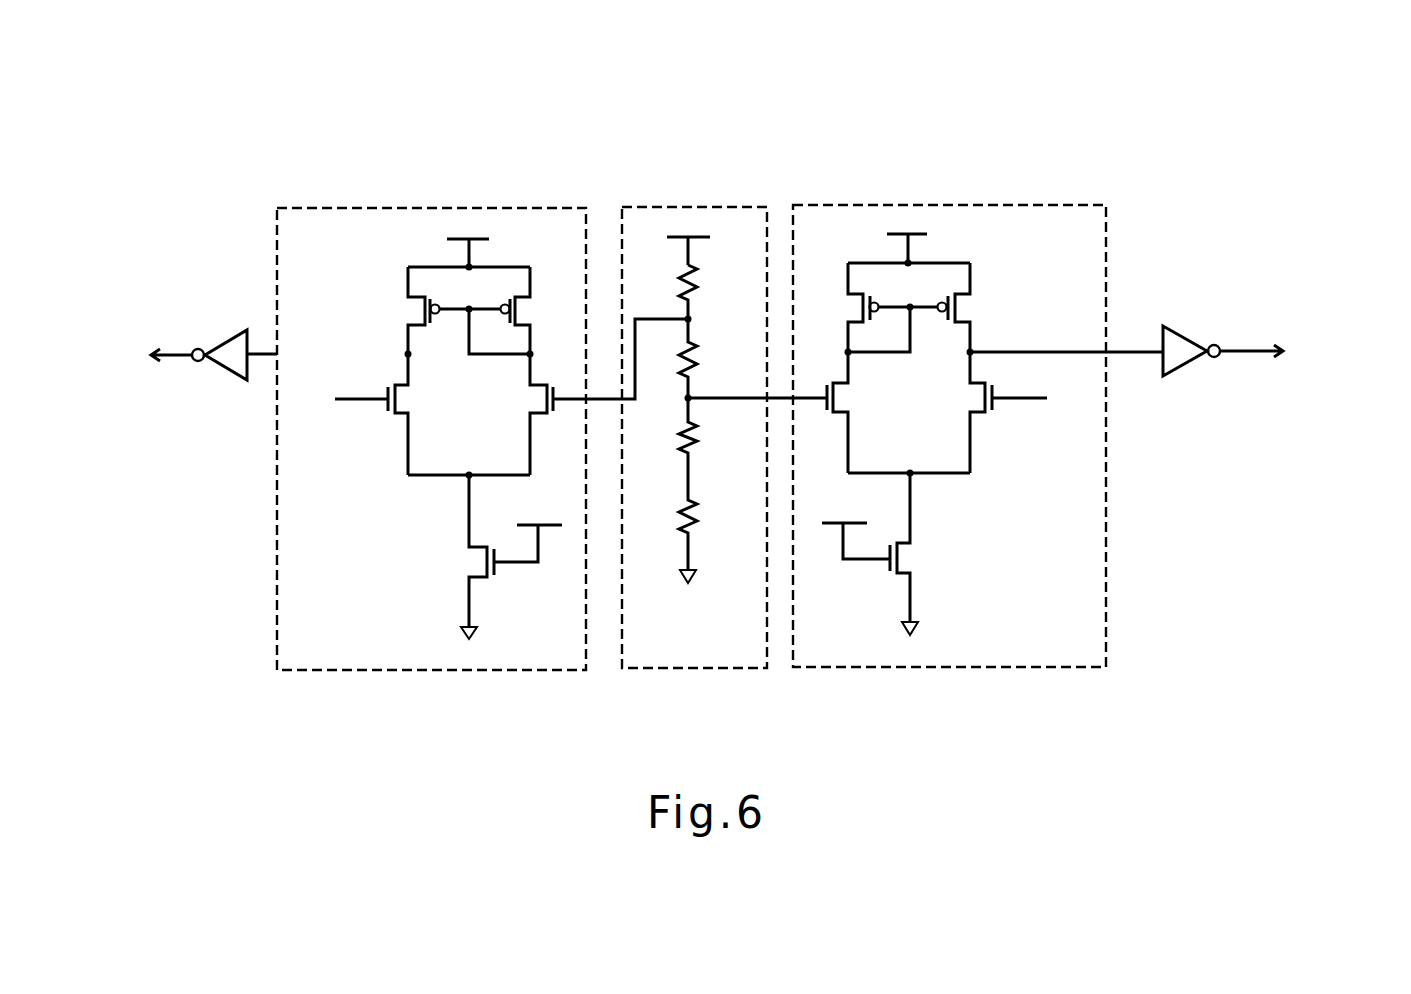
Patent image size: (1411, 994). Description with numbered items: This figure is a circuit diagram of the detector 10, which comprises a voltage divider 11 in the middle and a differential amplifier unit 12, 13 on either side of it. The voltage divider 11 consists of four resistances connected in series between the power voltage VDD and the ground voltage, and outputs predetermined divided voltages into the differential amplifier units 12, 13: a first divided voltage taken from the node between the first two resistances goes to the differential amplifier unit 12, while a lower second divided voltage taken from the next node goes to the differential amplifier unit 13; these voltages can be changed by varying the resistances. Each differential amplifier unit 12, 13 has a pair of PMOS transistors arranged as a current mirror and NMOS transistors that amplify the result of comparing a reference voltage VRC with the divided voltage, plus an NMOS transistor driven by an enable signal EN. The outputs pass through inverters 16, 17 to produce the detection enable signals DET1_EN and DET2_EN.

The detector 10 is at (1029, 121).
The voltage divider 11 is at (766, 207).
The differential amplifier unit 12 is at (277, 210).
The differential amplifier unit 13 is at (1105, 205).
The first inverter (DET1_EN output) 16 is at (168, 344).
The second inverter (DET2_EN output) 17 is at (1178, 335).